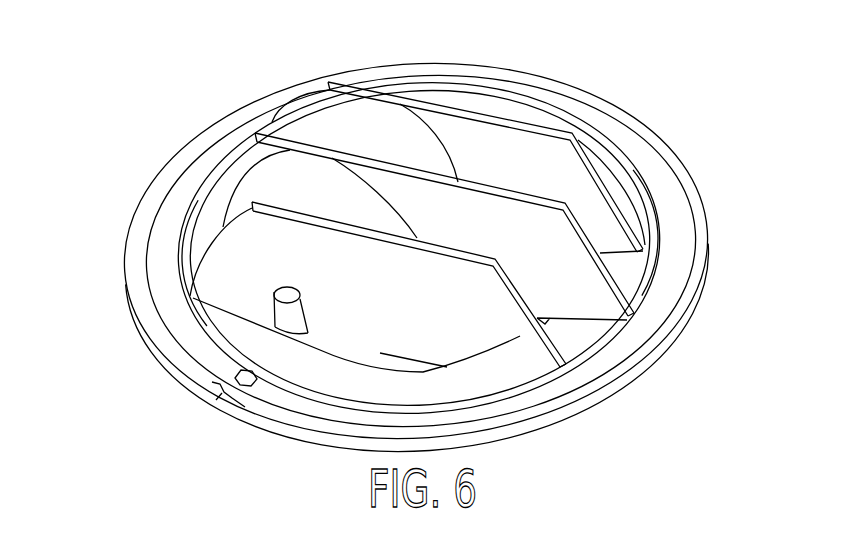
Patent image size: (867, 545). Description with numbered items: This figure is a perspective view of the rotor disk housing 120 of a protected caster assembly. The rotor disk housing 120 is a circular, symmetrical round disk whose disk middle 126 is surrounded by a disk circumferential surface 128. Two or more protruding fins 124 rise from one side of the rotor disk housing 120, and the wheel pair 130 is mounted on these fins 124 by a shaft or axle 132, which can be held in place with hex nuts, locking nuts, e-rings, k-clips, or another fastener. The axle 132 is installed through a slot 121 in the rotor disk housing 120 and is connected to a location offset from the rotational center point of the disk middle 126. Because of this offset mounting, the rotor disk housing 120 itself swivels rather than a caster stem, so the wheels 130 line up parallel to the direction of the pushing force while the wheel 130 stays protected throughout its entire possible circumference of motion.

The rotor disk housing 120 is at (150, 186).
The disk circumferential surface 128 is at (143, 265).
The wheel 130 is at (407, 142).
The protruding fins 124 is at (470, 340).
The disk middle 126 is at (363, 383).
The slot 121 is at (273, 302).
The axle 132 is at (293, 320).